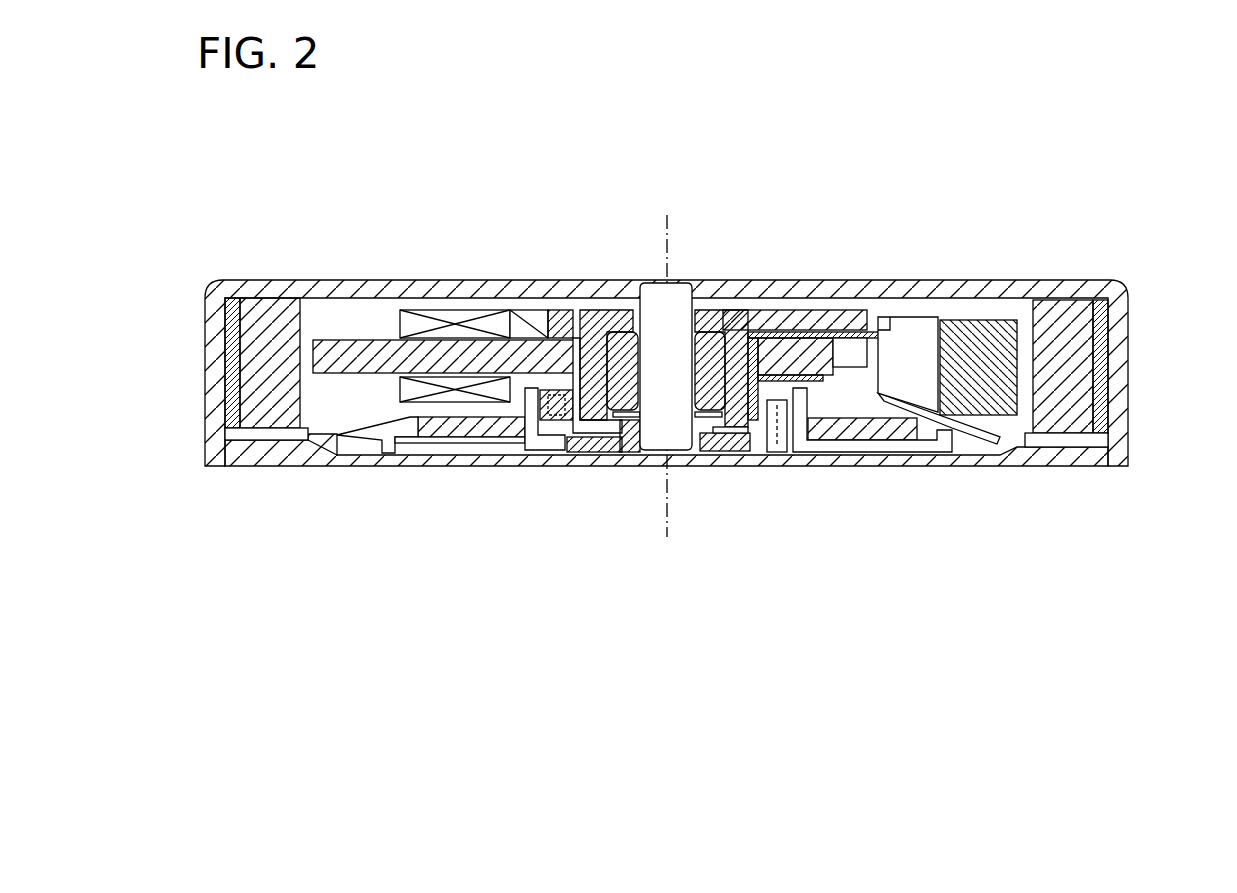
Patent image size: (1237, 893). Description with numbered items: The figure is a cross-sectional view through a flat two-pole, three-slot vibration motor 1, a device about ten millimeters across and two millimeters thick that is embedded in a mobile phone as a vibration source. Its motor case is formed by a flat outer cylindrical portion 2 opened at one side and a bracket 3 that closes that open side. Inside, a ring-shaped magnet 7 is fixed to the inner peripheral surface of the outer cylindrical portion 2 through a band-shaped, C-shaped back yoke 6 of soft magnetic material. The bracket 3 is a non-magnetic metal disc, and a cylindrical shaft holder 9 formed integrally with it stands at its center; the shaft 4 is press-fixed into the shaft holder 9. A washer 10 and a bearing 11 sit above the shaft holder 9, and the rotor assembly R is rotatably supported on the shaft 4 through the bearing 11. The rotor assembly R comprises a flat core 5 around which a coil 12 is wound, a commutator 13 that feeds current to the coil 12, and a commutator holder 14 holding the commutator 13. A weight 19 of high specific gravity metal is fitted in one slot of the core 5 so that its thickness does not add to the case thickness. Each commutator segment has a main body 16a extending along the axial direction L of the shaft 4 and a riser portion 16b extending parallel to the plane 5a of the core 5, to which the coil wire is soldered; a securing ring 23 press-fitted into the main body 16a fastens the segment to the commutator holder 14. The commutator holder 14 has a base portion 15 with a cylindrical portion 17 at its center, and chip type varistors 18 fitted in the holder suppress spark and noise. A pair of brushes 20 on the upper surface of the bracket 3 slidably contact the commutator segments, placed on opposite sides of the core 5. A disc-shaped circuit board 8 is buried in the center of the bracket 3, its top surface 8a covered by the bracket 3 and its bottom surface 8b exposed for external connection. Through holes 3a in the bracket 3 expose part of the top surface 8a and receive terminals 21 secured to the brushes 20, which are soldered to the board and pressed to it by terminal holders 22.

The vibration motor 1 is at (744, 136).
The outer cylindrical portion 2 is at (1134, 334).
The bracket 3 is at (692, 494).
The through holes 3a is at (360, 448).
The shaft 4 is at (656, 320).
The core 5 is at (358, 348).
The plane of the core 5a is at (374, 342).
The back yoke 6 is at (233, 304).
The magnet 7 is at (275, 304).
The circuit board 8 is at (586, 458).
The top surface of the circuit board 8a is at (965, 448).
The bottom surface of the circuit board 8b is at (856, 462).
The shaft holder 9 is at (700, 456).
The washer 10 is at (632, 456).
The bearing 11 is at (709, 373).
The coil 12 is at (452, 318).
The commutator 13 is at (840, 335).
The commutator holder 14 is at (791, 304).
The base portion 15 is at (814, 324).
The main body 16a is at (750, 456).
The riser portion 16b is at (890, 325).
The cylindrical portion 17 is at (597, 373).
The chip type varistor 18 is at (561, 318).
The weight 19 is at (958, 328).
The brushes 20 is at (545, 443).
The terminals 21 is at (438, 444).
The terminal holders 22 is at (486, 438).
The securing ring 23 is at (817, 382).
The rotor assembly R is at (755, 304).
The axial direction L is at (669, 505).